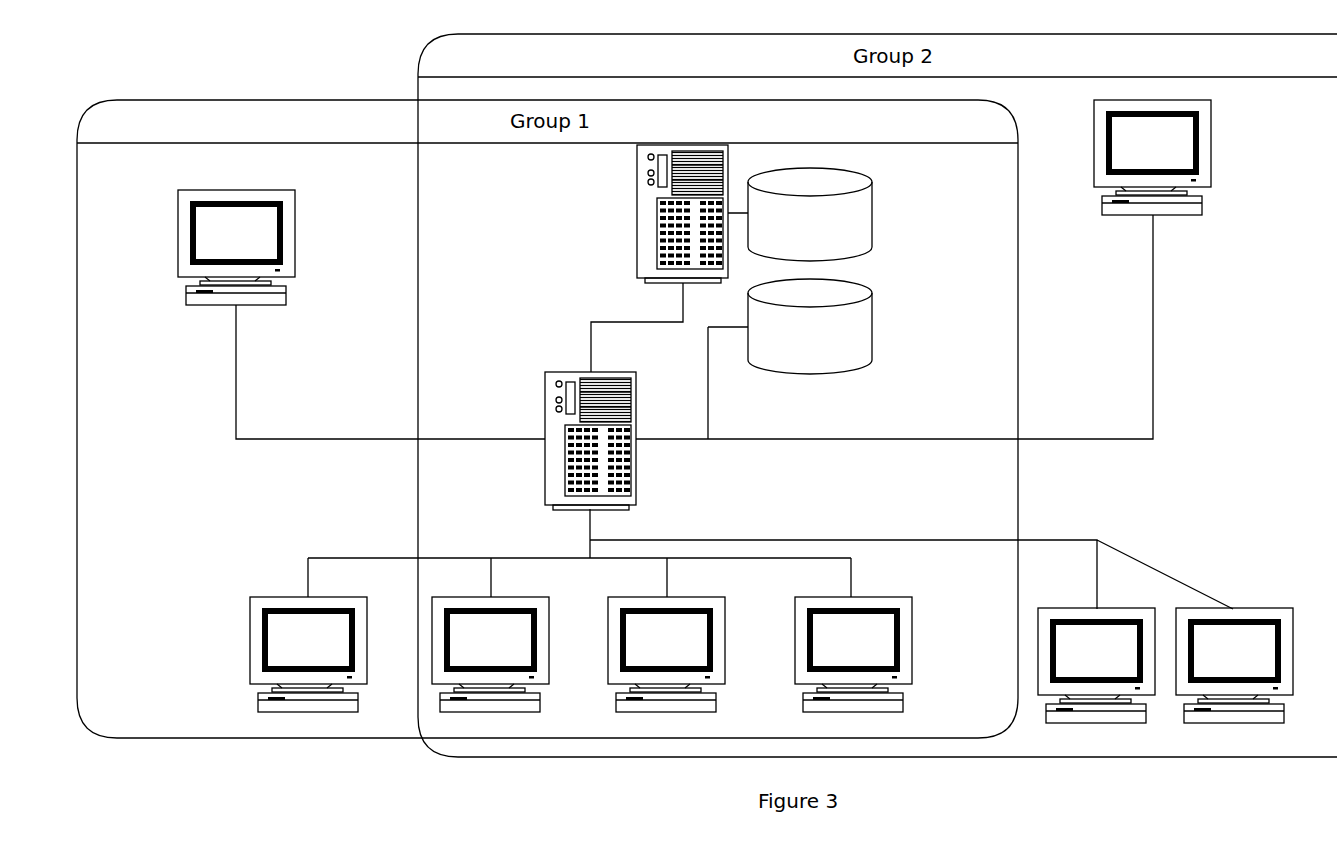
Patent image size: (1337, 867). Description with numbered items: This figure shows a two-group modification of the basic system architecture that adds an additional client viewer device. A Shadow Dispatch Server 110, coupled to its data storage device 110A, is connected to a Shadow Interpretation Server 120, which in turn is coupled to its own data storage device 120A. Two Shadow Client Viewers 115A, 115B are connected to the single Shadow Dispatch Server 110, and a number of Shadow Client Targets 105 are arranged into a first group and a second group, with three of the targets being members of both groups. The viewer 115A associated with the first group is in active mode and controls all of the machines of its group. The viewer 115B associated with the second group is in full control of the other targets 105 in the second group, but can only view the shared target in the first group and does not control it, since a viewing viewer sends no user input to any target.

The Shadow Client Target 105 is at (260, 597).
The Shadow Dispatch Server 110 is at (545, 382).
The data storage device 110A is at (873, 323).
The Shadow Client Viewer 115A is at (293, 248).
The Shadow Client Viewer 115B is at (1210, 158).
The Shadow Interpretation Server 120 is at (637, 212).
The data storage device 120A is at (873, 210).